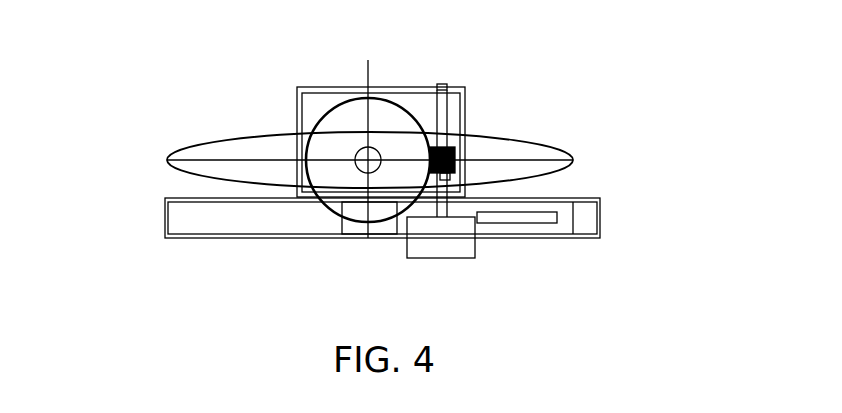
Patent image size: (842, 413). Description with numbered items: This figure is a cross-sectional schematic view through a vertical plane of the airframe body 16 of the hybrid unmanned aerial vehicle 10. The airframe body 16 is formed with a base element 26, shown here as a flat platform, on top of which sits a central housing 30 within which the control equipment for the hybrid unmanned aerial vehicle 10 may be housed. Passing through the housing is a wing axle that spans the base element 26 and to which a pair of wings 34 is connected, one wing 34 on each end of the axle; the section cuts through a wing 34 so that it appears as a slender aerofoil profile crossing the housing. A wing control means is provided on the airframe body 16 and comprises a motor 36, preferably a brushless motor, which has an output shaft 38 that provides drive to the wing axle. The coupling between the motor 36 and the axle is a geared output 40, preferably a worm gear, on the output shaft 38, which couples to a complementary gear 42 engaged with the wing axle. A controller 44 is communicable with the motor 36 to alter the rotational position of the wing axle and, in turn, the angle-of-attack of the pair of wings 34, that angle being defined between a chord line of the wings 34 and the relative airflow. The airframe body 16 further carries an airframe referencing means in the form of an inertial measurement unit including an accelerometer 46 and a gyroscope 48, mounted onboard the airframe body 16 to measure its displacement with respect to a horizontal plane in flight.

The hybrid unmanned aerial vehicle 10 is at (632, 88).
The airframe body 16 is at (158, 220).
The base element 26 is at (265, 223).
The central housing 30 is at (290, 102).
The wing 34 is at (570, 150).
The motor 36 is at (443, 257).
The output shaft 38 is at (448, 100).
The geared output 40 is at (455, 158).
The complementary gear 42 is at (355, 112).
The controller 44 is at (525, 223).
The accelerometer 46 is at (352, 225).
The gyroscope 48 is at (597, 233).